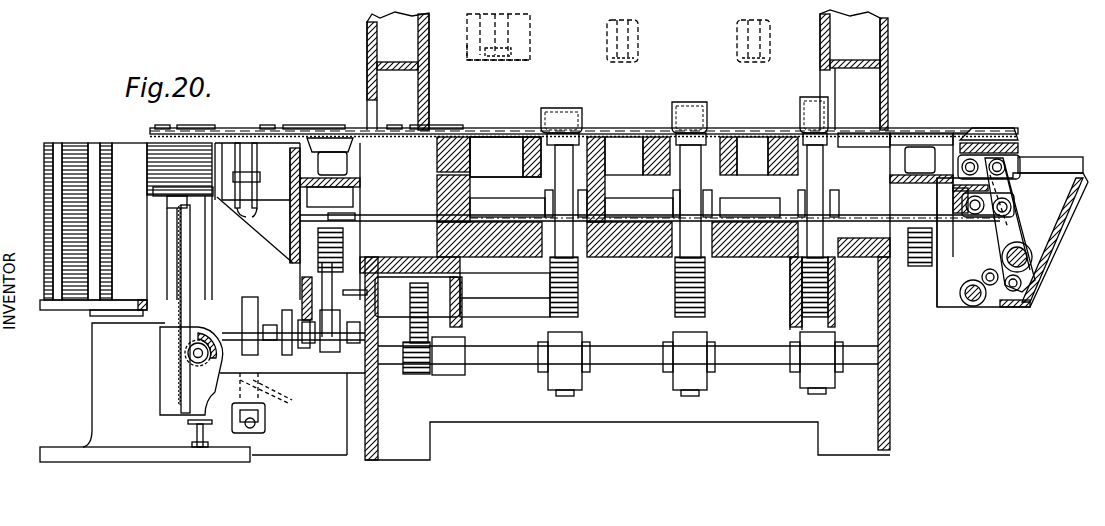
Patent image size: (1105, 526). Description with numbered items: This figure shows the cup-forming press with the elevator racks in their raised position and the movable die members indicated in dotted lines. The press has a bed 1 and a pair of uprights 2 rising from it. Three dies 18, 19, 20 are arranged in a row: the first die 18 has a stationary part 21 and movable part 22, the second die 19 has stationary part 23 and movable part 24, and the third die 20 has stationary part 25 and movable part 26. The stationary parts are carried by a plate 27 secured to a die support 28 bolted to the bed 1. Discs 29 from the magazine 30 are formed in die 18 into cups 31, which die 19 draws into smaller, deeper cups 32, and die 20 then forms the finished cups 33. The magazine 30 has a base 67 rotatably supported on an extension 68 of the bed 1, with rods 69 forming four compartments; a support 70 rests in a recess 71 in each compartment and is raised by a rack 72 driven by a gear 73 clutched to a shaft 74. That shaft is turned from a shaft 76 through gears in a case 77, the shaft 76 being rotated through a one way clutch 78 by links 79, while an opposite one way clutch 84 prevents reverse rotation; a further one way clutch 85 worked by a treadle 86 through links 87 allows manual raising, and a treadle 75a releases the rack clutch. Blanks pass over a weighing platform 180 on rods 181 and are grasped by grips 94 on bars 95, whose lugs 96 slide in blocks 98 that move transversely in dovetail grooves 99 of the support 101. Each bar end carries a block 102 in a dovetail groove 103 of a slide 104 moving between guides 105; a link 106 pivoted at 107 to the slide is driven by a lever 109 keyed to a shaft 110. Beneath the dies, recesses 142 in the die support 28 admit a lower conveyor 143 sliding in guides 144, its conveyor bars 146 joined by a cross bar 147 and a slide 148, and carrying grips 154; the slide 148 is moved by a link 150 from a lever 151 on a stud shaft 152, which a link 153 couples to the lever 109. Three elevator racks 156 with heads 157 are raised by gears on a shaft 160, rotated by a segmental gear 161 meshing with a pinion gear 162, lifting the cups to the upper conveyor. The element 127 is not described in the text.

The bed 1 is at (890, 373).
The uprights 2 is at (367, 40).
The die 18 is at (498, 63).
The die 19 is at (622, 69).
The die 20 is at (754, 71).
The stationary part 21 is at (505, 157).
The movable part 22 is at (530, 30).
The stationary part 23 is at (628, 179).
The movable part 24 is at (638, 33).
The stationary part 25 is at (759, 156).
The movable part 26 is at (770, 36).
The plate 27 is at (437, 160).
The die support 28 is at (437, 184).
The discs 29 is at (70, 143).
The magazine 30 is at (42, 310).
The cups 31 is at (560, 110).
The cups 32 is at (690, 104).
The finished cups 33 is at (808, 98).
The base 67 is at (72, 316).
The extension 68 is at (92, 380).
The rods 69 is at (100, 166).
The support 70 is at (187, 200).
The recesses 71 is at (200, 300).
The rack 72 is at (191, 245).
The gear 73 is at (188, 348).
The shaft 74 is at (193, 355).
The treadle 75a is at (188, 422).
The shaft 76 is at (270, 325).
The case 77 is at (222, 330).
The one way clutch 78 is at (330, 352).
The links 79 is at (330, 300).
The one way clutch 84 is at (288, 355).
The one way clutch 85 is at (258, 312).
The treadle 86 is at (265, 424).
The links 87 is at (274, 391).
The grips 94 is at (200, 126).
The bars 95 is at (504, 132).
The lug 96 is at (860, 133).
The blocks 98 is at (347, 160).
The dovetail grooves 99 is at (353, 145).
The support 101 is at (1030, 300).
The block 102 is at (990, 128).
The dovetail groove 103 is at (1018, 135).
The slide 104 is at (1020, 153).
The guides 105 is at (1058, 157).
The link 106 is at (1008, 188).
The pivot 107 is at (968, 132).
The lever 109 is at (1018, 215).
The shaft 110 is at (1032, 257).
The gear 127 is at (318, 250).
The recesses 142 is at (620, 195).
The lower conveyor 143 is at (637, 225).
The guides 144 is at (472, 208).
The conveyor bars 146 is at (390, 221).
The cross bar 147 is at (355, 215).
The slide 148 is at (953, 200).
The link 150 is at (1012, 205).
The lever 151 is at (1020, 234).
The stud shaft 152 is at (973, 306).
The link 153 is at (1008, 292).
The grips 154 is at (545, 193).
The racks 156 is at (560, 396).
The head 157 is at (585, 135).
The shaft 160 is at (762, 360).
The segmental gear 161 is at (410, 305).
The pinion gear 162 is at (416, 372).
The platform 180 is at (245, 128).
The rods 181 is at (250, 208).